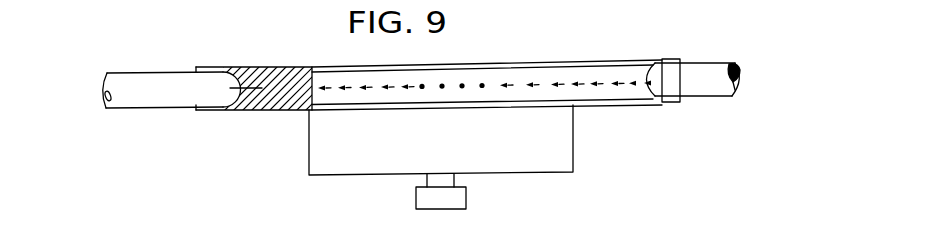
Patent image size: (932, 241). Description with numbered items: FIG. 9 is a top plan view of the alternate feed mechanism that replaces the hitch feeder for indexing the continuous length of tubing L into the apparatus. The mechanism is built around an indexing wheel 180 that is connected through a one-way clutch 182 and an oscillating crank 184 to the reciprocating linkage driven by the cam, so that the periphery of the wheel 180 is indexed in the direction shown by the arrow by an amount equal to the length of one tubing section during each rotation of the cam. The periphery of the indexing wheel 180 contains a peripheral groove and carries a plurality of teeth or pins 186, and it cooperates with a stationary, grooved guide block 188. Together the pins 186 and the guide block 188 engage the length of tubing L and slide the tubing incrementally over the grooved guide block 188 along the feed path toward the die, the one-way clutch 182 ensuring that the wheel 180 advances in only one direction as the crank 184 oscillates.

The continuous length of tubing L is at (152, 97).
The indexing wheel 180 is at (495, 72).
The one-way clutch 182 is at (515, 157).
The oscillating crank 184 is at (425, 198).
The teeth or pins 186 is at (247, 88).
The grooved guide block 188 is at (673, 102).